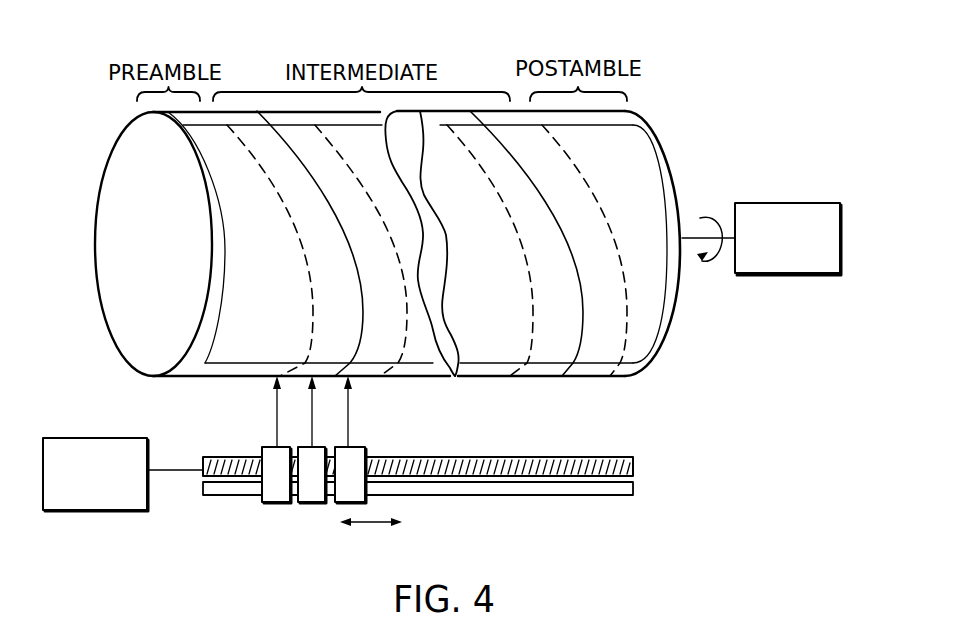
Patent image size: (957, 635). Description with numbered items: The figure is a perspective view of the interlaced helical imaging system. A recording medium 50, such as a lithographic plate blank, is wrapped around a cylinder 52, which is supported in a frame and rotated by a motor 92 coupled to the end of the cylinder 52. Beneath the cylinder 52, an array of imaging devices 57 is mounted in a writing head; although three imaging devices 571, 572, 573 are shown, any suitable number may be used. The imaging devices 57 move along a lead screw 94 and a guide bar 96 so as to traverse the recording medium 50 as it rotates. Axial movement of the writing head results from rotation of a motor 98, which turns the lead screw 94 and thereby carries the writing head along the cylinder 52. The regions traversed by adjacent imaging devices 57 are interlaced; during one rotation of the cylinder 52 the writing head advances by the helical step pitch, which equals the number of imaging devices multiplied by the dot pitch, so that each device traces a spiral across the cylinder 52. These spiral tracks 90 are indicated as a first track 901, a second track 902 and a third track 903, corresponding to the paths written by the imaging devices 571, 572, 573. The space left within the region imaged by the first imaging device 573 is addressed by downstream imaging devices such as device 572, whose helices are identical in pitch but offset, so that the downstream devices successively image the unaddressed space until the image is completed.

The recording medium 50 is at (655, 279).
The cylinder 52 is at (667, 181).
The imaging devices 57 is at (316, 463).
The imaging device 571 is at (262, 503).
The imaging device 572 is at (308, 503).
The imaging device 573 is at (368, 447).
The tracks 90 is at (537, 263).
The first track 901 is at (508, 378).
The second track 902 is at (567, 377).
The third track 903 is at (613, 377).
The drum rotation motor 92 is at (763, 203).
The lead screw 94 is at (633, 463).
The guide bar 96 is at (520, 495).
The motor 98 is at (70, 438).